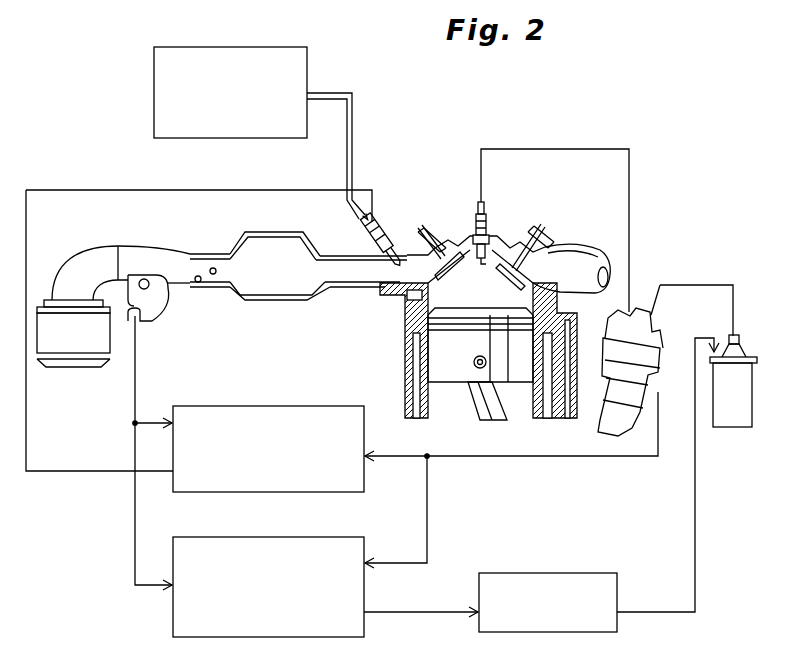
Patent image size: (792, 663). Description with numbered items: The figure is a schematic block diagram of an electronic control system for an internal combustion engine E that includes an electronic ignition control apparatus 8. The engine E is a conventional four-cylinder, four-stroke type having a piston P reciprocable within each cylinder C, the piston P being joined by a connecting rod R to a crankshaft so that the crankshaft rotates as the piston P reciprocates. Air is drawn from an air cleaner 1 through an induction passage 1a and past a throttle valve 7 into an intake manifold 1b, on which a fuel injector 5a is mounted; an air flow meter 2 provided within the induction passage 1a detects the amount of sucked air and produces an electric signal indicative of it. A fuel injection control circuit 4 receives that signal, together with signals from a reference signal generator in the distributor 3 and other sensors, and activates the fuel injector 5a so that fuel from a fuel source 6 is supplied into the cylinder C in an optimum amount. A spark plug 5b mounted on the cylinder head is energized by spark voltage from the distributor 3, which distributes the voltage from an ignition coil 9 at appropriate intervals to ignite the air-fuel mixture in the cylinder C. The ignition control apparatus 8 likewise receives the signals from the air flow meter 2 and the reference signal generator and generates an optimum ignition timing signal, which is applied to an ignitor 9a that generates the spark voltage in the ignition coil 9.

The air cleaner 1 is at (80, 361).
The induction passage 1a is at (198, 283).
The intake manifold 1b is at (368, 287).
The air flow meter 2 is at (160, 305).
The distributor 3 is at (662, 330).
The fuel injection control circuit 4 is at (245, 405).
The fuel injector 5a is at (382, 219).
The spark plug 5b is at (490, 226).
The fuel source 6 is at (310, 69).
The throttle valve 7 is at (216, 274).
The electronic ignition control apparatus 8 is at (255, 537).
The ignition coil 9 is at (742, 426).
The ignitor 9a is at (547, 573).
The cylinder C is at (404, 325).
The internal combustion engine E is at (397, 368).
The piston P is at (443, 375).
The connecting rod R is at (490, 419).